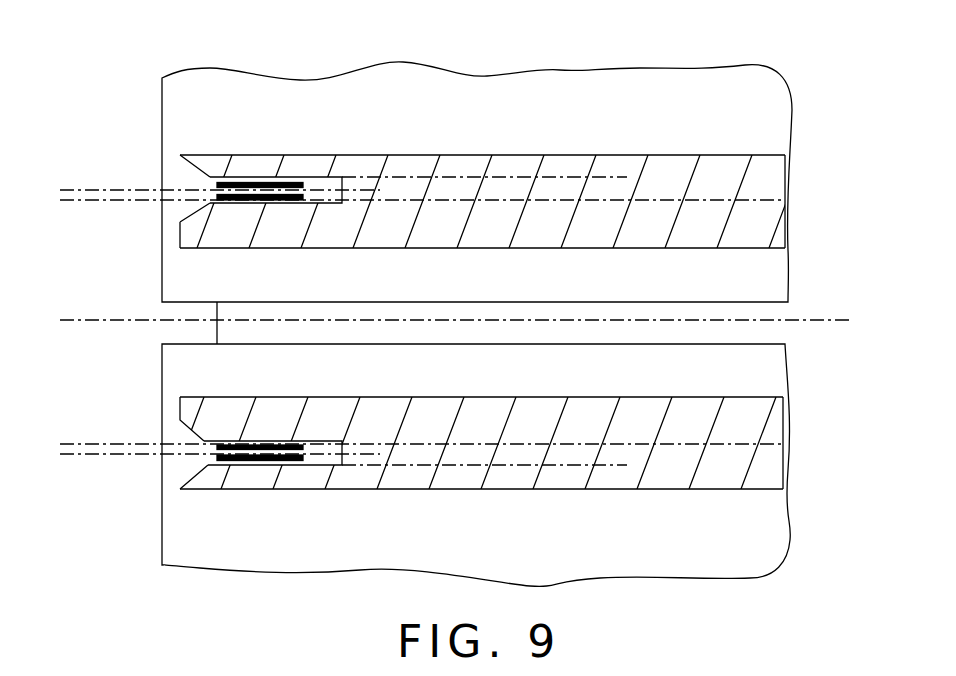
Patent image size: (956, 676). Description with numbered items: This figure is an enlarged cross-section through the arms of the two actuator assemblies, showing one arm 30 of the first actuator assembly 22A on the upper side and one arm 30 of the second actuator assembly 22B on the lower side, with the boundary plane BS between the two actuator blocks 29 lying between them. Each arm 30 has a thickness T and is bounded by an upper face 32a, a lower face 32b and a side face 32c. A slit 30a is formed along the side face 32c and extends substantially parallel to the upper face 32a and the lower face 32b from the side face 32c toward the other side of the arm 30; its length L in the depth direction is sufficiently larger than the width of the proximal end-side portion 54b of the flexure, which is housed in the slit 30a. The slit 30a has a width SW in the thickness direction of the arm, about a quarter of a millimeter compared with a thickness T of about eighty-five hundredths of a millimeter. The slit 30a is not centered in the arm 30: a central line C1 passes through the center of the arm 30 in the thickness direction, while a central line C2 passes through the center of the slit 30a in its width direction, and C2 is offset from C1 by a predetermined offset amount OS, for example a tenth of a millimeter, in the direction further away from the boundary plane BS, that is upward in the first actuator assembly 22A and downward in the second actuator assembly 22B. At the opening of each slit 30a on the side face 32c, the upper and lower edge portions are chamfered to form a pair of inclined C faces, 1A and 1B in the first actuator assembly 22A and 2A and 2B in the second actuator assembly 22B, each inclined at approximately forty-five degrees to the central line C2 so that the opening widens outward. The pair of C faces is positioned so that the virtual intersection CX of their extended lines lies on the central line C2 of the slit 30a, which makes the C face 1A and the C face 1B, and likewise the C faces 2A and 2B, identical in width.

The first actuator assembly 22A is at (193, 95).
The second actuator assembly 22B is at (155, 546).
The actuator block 29 is at (657, 82).
The arm 30 is at (698, 165).
The slit 30a is at (312, 187).
The upper face 32a is at (753, 155).
The lower face 32b is at (718, 249).
The side face 32c is at (179, 154).
The proximal end-side portion of the flexure 54b is at (262, 195).
The first inclined face (C face) 1A is at (208, 183).
The second inclined face (C face) 1B is at (188, 211).
The first inclined face (C face) 2A is at (206, 460).
The second inclined face (C face) 2B is at (190, 430).
The virtual intersection CX is at (210, 190).
The central line of the arm C1 is at (77, 201).
The central line of the slit C2 is at (76, 189).
The offset amount OS is at (117, 232).
The slit width SW is at (493, 230).
The arm thickness T is at (627, 273).
The slit length L is at (340, 268).
The boundary plane BS is at (84, 319).